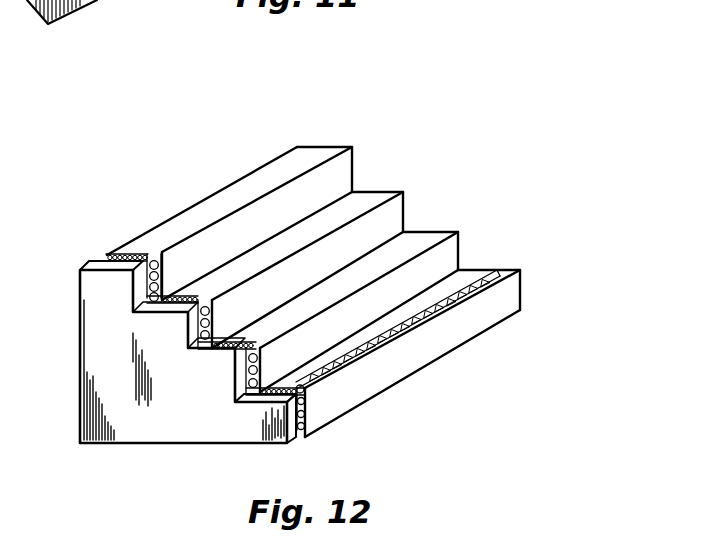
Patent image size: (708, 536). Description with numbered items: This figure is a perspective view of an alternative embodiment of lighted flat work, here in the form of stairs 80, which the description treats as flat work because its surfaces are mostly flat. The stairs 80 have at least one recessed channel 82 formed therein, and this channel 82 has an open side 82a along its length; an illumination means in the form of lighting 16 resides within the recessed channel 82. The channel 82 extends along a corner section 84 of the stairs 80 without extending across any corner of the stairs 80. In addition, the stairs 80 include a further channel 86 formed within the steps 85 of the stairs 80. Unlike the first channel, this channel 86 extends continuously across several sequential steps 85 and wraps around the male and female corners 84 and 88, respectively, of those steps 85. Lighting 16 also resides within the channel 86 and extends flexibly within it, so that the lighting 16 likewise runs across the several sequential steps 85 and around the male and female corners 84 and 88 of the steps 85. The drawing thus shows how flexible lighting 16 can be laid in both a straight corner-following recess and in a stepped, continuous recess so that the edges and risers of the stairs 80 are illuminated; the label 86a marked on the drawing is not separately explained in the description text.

The stairs 80 is at (456, 95).
The recessed channel 82 is at (504, 268).
The open side 82a is at (482, 270).
The corner section 84 is at (303, 147).
The steps 85 is at (324, 295).
The channel 86 is at (100, 258).
The end block gasket 86a is at (135, 253).
The female corner 88 is at (377, 245).
The lighting 16 is at (187, 327).